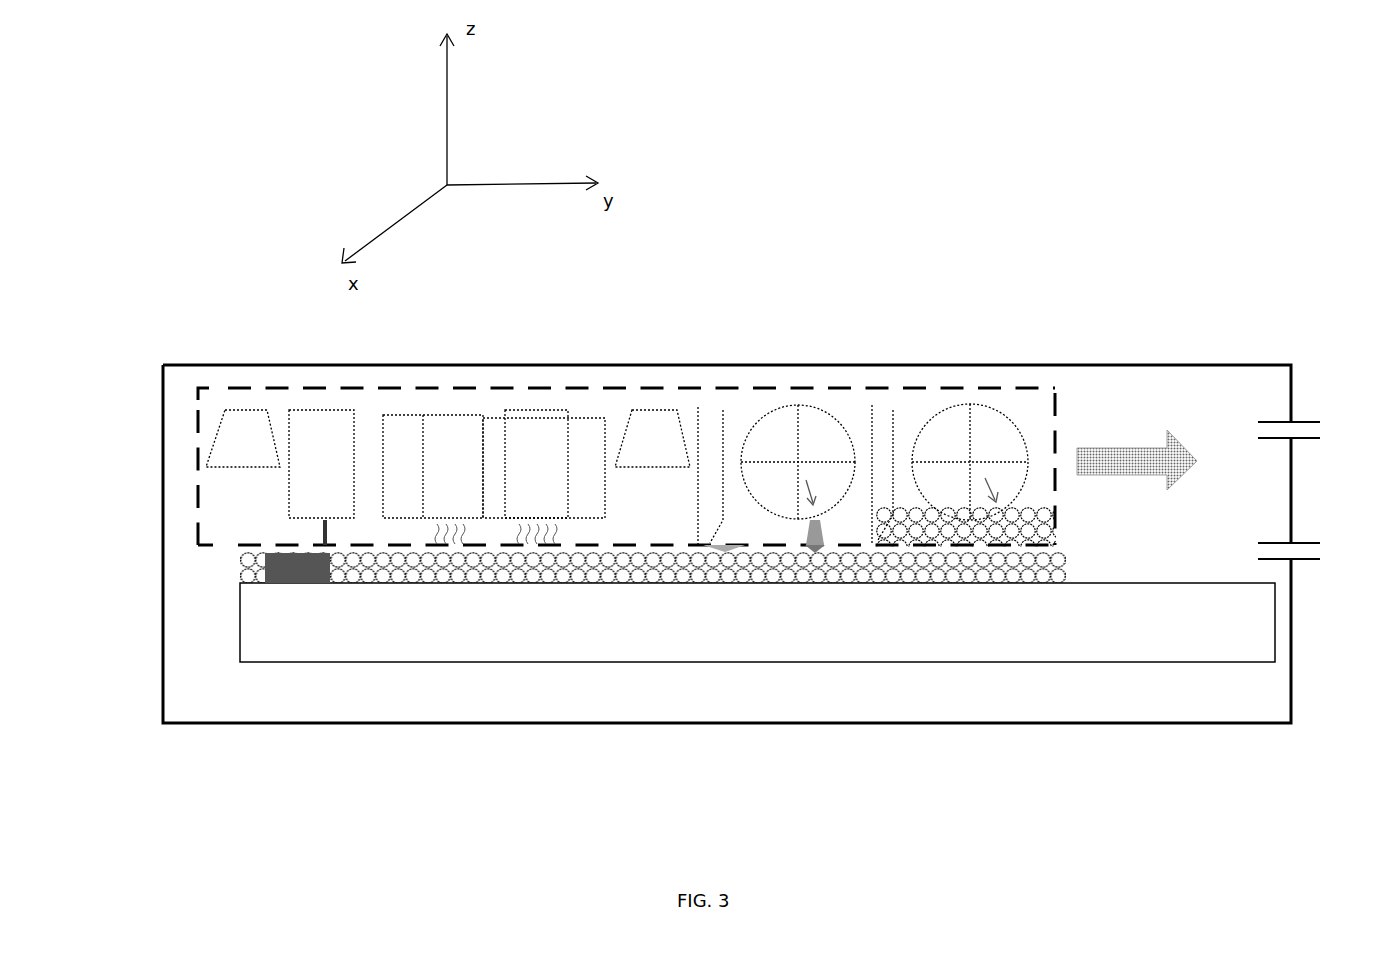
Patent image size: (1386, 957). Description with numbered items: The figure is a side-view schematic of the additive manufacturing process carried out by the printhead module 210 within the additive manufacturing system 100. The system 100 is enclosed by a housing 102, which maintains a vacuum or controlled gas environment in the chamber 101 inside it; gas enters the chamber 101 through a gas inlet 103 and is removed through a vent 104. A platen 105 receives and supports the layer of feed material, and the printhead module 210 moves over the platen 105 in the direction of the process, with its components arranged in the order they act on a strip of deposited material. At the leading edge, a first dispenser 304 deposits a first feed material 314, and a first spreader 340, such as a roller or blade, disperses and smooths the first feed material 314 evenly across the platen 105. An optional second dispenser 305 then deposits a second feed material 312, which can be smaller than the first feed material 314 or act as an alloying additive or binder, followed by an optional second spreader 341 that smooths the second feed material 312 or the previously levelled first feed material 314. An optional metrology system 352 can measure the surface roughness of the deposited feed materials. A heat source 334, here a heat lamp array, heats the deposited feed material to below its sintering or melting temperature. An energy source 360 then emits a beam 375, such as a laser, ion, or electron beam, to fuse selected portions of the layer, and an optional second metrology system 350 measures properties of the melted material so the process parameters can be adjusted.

The additive manufacturing system 100 is at (780, 196).
The chamber 101 is at (1213, 411).
The housing 102 is at (1178, 365).
The gas inlet 103 is at (1295, 428).
The vent 104 is at (1307, 552).
The platen 105 is at (1172, 662).
The printhead module 210 is at (1033, 388).
The first dispenser 304 is at (997, 433).
The second dispenser 305 is at (775, 414).
The second feed material 312 is at (817, 528).
The first feed material 314 is at (1025, 573).
The heat source 334 is at (458, 430).
The first spreader 340 is at (878, 417).
The second spreader 341 is at (715, 428).
The second metrology system 350 is at (237, 437).
The metrology system 352 is at (647, 418).
The energy source 360 is at (330, 428).
The beam 375 is at (330, 532).